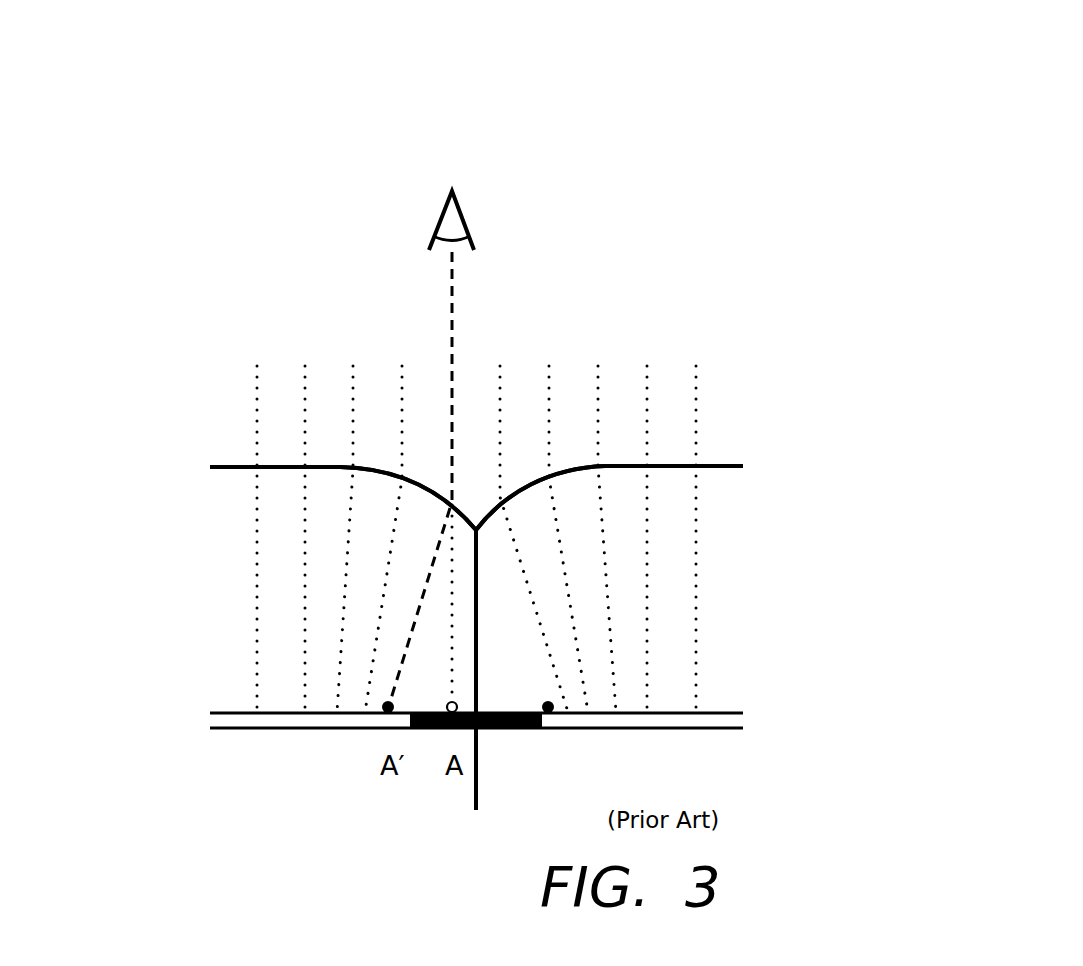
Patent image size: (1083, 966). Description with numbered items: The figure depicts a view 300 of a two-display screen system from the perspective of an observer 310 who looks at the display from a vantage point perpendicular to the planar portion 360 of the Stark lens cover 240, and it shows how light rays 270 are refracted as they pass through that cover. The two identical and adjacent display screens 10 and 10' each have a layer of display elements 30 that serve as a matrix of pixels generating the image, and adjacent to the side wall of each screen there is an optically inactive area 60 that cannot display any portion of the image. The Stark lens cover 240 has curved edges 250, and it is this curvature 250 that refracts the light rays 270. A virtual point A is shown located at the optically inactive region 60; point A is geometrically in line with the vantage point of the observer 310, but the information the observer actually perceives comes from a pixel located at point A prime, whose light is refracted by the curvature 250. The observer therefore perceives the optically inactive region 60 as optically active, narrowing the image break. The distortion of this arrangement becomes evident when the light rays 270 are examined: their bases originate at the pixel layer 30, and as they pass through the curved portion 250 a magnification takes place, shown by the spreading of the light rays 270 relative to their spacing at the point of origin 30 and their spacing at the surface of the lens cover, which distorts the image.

The view 300 is at (637, 222).
The observer 310 is at (445, 212).
The light rays 270 is at (353, 365).
The curved edges 250 is at (422, 480).
The display screen 10 is at (176, 538).
The display screen 10' is at (705, 537).
The planar portion 360 is at (220, 467).
The Stark lens cover 240 is at (233, 580).
The display elements 30 is at (240, 722).
The optically inactive area 60 is at (428, 730).